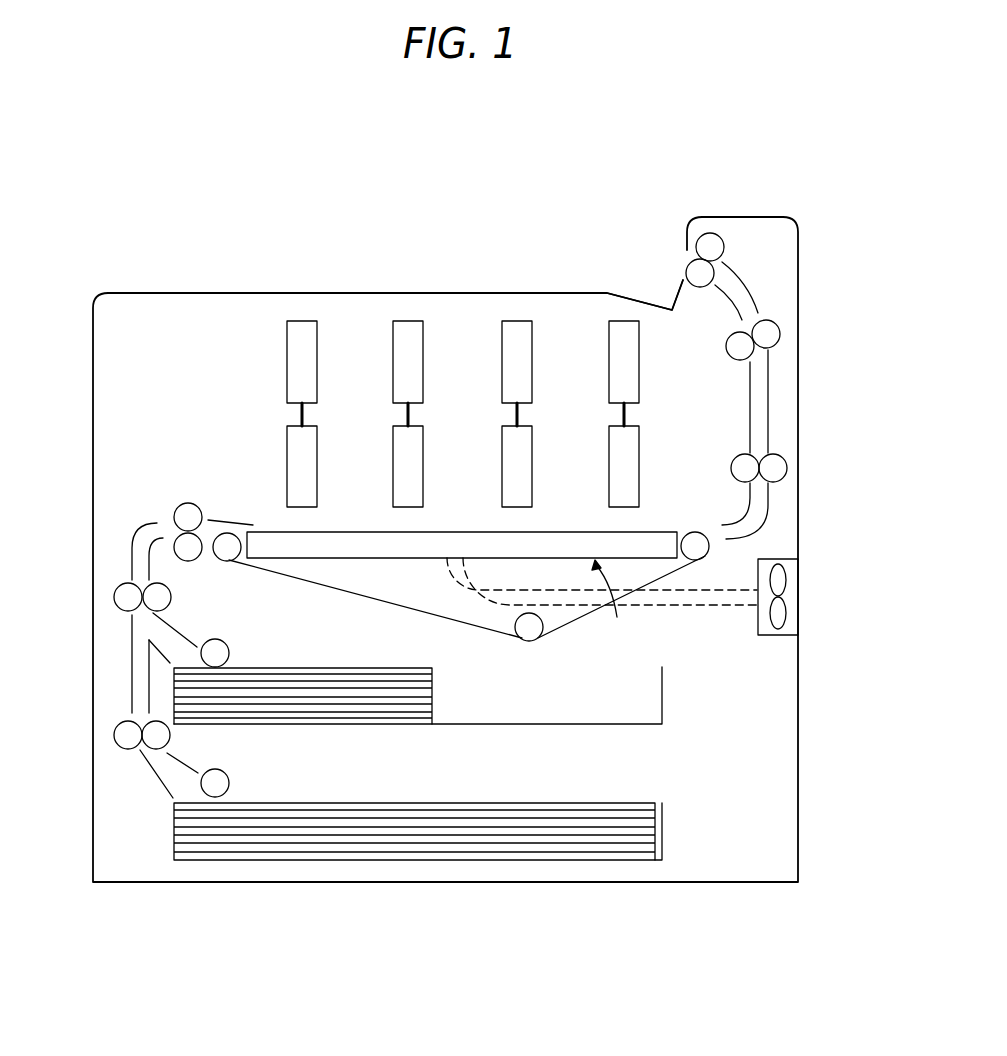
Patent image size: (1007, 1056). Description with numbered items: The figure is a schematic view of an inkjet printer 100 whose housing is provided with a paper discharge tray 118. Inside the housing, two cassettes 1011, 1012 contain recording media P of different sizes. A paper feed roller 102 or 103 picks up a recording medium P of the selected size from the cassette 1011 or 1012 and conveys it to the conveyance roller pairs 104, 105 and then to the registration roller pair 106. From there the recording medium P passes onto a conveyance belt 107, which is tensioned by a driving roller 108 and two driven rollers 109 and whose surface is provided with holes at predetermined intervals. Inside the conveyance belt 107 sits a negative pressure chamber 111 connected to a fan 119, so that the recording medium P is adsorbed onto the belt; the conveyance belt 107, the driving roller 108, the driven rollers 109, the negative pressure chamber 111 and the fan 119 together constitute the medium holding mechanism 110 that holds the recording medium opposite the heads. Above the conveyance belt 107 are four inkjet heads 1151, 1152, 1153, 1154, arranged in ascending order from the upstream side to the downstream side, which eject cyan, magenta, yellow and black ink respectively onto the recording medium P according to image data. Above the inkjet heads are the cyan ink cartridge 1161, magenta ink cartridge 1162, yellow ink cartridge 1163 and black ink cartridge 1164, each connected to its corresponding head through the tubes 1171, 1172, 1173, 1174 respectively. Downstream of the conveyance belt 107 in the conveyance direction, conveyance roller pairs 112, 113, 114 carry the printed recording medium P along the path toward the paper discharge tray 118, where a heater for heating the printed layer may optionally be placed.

The inkjet printer 100 is at (812, 175).
The paper feed roller 102 is at (229, 652).
The paper feed roller 103 is at (229, 783).
The conveyance roller pair 104 is at (114, 597).
The conveyance roller pair 105 is at (114, 738).
The registration roller pair 106 is at (174, 513).
The conveyance belt 107 is at (380, 606).
The driving roller 108 is at (699, 553).
The driven roller 109 is at (224, 553).
The medium holding mechanism 110 is at (614, 604).
The negative pressure chamber 111 is at (426, 560).
The conveyance roller pair 112 is at (787, 466).
The conveyance roller pair 113 is at (780, 328).
The conveyance roller pair 114 is at (724, 246).
The paper discharge tray 118 is at (662, 298).
The fan 119 is at (790, 592).
The cassette 1011 is at (664, 835).
The cassette 1012 is at (664, 695).
The inkjet head 1151 is at (287, 468).
The inkjet head 1152 is at (393, 468).
The inkjet head 1153 is at (502, 468).
The inkjet head 1154 is at (640, 490).
The ink cartridge 1161 is at (303, 321).
The ink cartridge 1162 is at (408, 321).
The ink cartridge 1163 is at (517, 321).
The ink cartridge 1164 is at (624, 321).
The tube 1171 is at (300, 415).
The tube 1172 is at (406, 415).
The tube 1173 is at (515, 415).
The tube 1174 is at (626, 415).
The recording medium P is at (387, 722).